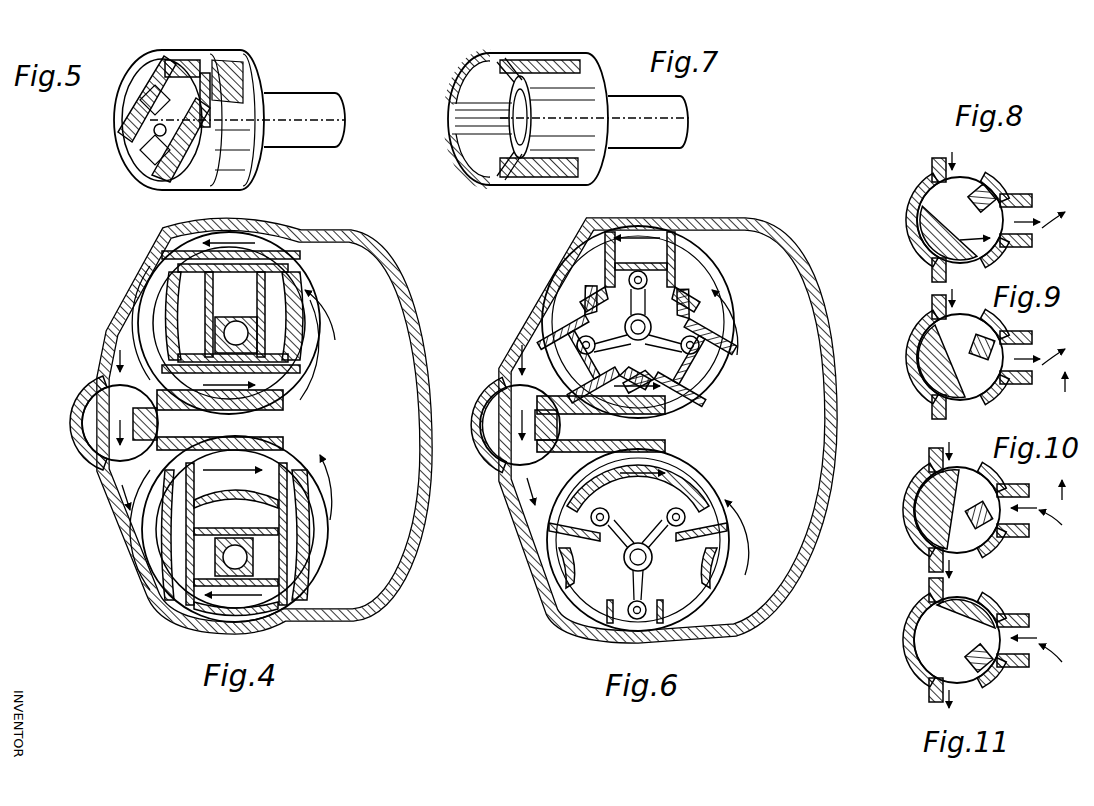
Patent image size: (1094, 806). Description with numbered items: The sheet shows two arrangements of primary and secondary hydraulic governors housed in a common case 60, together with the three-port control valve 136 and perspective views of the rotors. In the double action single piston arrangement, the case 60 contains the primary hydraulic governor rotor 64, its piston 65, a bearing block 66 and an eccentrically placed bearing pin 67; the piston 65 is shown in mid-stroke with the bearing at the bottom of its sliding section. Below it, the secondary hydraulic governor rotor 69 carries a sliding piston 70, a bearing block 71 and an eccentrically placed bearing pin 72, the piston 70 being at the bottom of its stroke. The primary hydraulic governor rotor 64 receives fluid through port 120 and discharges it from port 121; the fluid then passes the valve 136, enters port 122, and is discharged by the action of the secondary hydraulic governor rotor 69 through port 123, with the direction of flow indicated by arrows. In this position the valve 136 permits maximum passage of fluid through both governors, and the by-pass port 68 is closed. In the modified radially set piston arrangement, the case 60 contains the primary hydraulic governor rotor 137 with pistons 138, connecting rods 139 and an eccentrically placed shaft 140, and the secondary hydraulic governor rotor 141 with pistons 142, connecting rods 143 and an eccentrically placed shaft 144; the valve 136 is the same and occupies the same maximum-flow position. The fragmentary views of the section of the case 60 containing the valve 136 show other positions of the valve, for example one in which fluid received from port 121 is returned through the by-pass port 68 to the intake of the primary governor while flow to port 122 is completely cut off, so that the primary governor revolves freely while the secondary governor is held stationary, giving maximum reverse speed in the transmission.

In FIG. 4, the case 60 is at (305, 230).
In FIG. 6, the case 60 is at (748, 226).
In FIG. 5, the case 60 is at (250, 72).
In FIG. 8, the case 60 is at (990, 200).
In FIG. 9, the case 60 is at (985, 392).
In FIG. 10, the case 60 is at (985, 545).
In FIG. 11, the case 60 is at (985, 612).
In FIG. 4, the primary hydraulic governor rotor 64 is at (310, 253).
In FIG. 5, the primary hydraulic governor rotor 64 is at (140, 160).
In FIG. 4, the piston 65 is at (300, 270).
In FIG. 5, the piston 65 is at (130, 143).
In FIG. 4, the bearing block 66 is at (237, 324).
In FIG. 5, the bearing block 66 is at (150, 128).
In FIG. 4, the eccentrically placed bearing pin 67 is at (264, 320).
In FIG. 5, the eccentrically placed bearing pin 67 is at (183, 60).
In FIG. 4, the by-pass port 68 is at (290, 421).
In FIG. 6, the by-pass port 68 is at (650, 429).
In FIG. 8, the by-pass port 68 is at (1048, 228).
In FIG. 9, the by-pass port 68 is at (1045, 384).
In FIG. 10, the by-pass port 68 is at (1044, 531).
In FIG. 11, the by-pass port 68 is at (1010, 636).
In FIG. 4, the secondary hydraulic governor rotor 69 is at (298, 478).
In FIG. 4, the sliding piston 70 is at (236, 540).
In FIG. 4, the bearing block 71 is at (257, 546).
In FIG. 4, the eccentrically placed bearing pin 72 is at (240, 563).
In FIG. 4, the port 120 is at (322, 352).
In FIG. 6, the port 120 is at (712, 244).
In FIG. 5, the port 120 is at (242, 136).
In FIG. 4, the port 121 is at (140, 328).
In FIG. 6, the port 121 is at (540, 318).
In FIG. 4, the port 122 is at (140, 518).
In FIG. 6, the port 122 is at (548, 531).
In FIG. 4, the port 123 is at (320, 546).
In FIG. 6, the port 123 is at (725, 571).
In FIG. 4, the valve 136 is at (92, 403).
In FIG. 6, the valve 136 is at (500, 468).
In FIG. 8, the valve 136 is at (915, 221).
In FIG. 9, the valve 136 is at (915, 357).
In FIG. 10, the valve 136 is at (915, 527).
In FIG. 11, the valve 136 is at (915, 647).
In FIG. 6, the primary hydraulic governor rotor 137 is at (712, 264).
In FIG. 7, the primary hydraulic governor rotor 137 is at (582, 78).
In FIG. 6, the pistons 138 is at (652, 272).
In FIG. 7, the pistons 138 is at (450, 118).
In FIG. 6, the connecting rods 139 is at (648, 302).
In FIG. 6, the eccentrically placed shaft 140 is at (655, 327).
In FIG. 6, the secondary hydraulic governor rotor 141 is at (690, 460).
In FIG. 6, the pistons 142 is at (690, 482).
In FIG. 6, the connecting rods 143 is at (700, 535).
In FIG. 6, the eccentrically placed shaft 144 is at (660, 562).